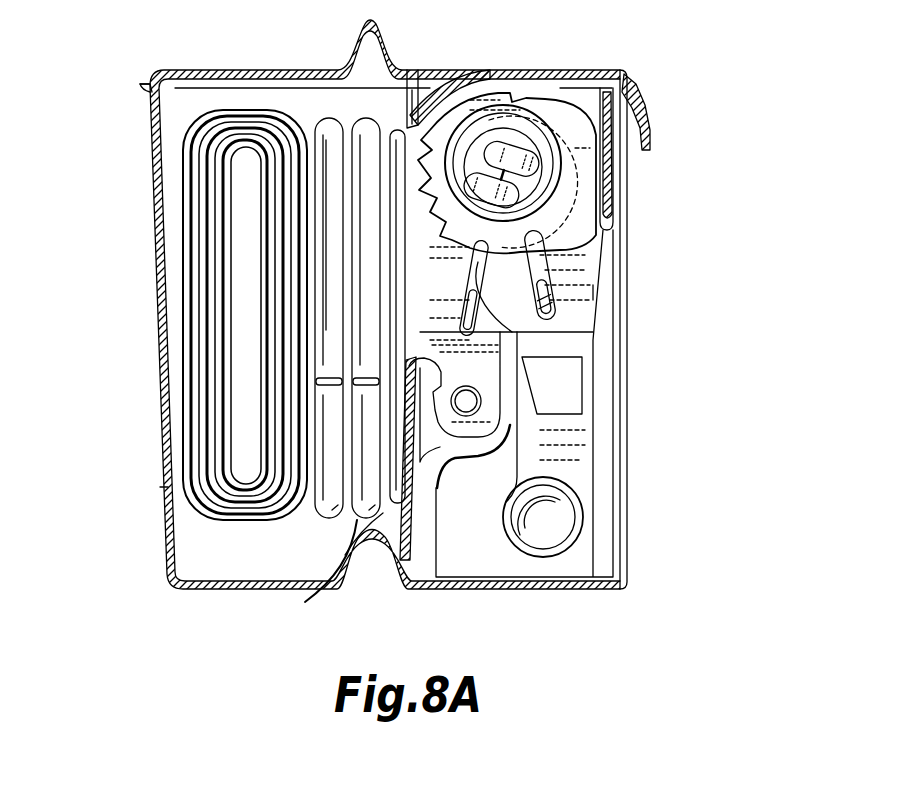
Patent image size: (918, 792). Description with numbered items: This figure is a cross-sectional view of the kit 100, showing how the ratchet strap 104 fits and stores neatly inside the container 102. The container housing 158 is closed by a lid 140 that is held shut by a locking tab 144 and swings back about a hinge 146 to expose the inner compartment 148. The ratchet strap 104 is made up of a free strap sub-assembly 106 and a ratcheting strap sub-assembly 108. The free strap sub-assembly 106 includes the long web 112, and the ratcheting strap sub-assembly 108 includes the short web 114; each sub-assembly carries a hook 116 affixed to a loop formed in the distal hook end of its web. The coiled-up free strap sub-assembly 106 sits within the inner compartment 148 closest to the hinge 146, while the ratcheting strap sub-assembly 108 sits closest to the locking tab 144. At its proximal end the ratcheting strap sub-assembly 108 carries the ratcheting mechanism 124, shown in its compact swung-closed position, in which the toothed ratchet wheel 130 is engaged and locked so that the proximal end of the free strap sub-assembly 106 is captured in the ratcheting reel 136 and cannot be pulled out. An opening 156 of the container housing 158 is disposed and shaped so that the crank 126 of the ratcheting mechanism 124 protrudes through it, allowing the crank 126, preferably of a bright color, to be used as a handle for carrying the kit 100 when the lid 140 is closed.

The kit 100 is at (690, 338).
The container 102 is at (627, 433).
The ratchet strap 104 is at (565, 115).
The free strap sub-assembly 106 is at (191, 267).
The ratcheting strap sub-assembly 108 is at (597, 266).
The long web 112 is at (193, 267).
The short web 114 is at (407, 560).
The hook 116 is at (318, 528).
The ratcheting mechanism 124 is at (594, 356).
The crank 126 is at (592, 520).
The toothed ratchet wheel 130 is at (443, 102).
The ratcheting reel 136 is at (560, 188).
The lid 140 is at (550, 72).
The locking tab 144 is at (648, 128).
The hinge 146 is at (146, 84).
The inner compartment 148 is at (250, 110).
The opening 156 is at (595, 292).
The container housing 158 is at (165, 487).